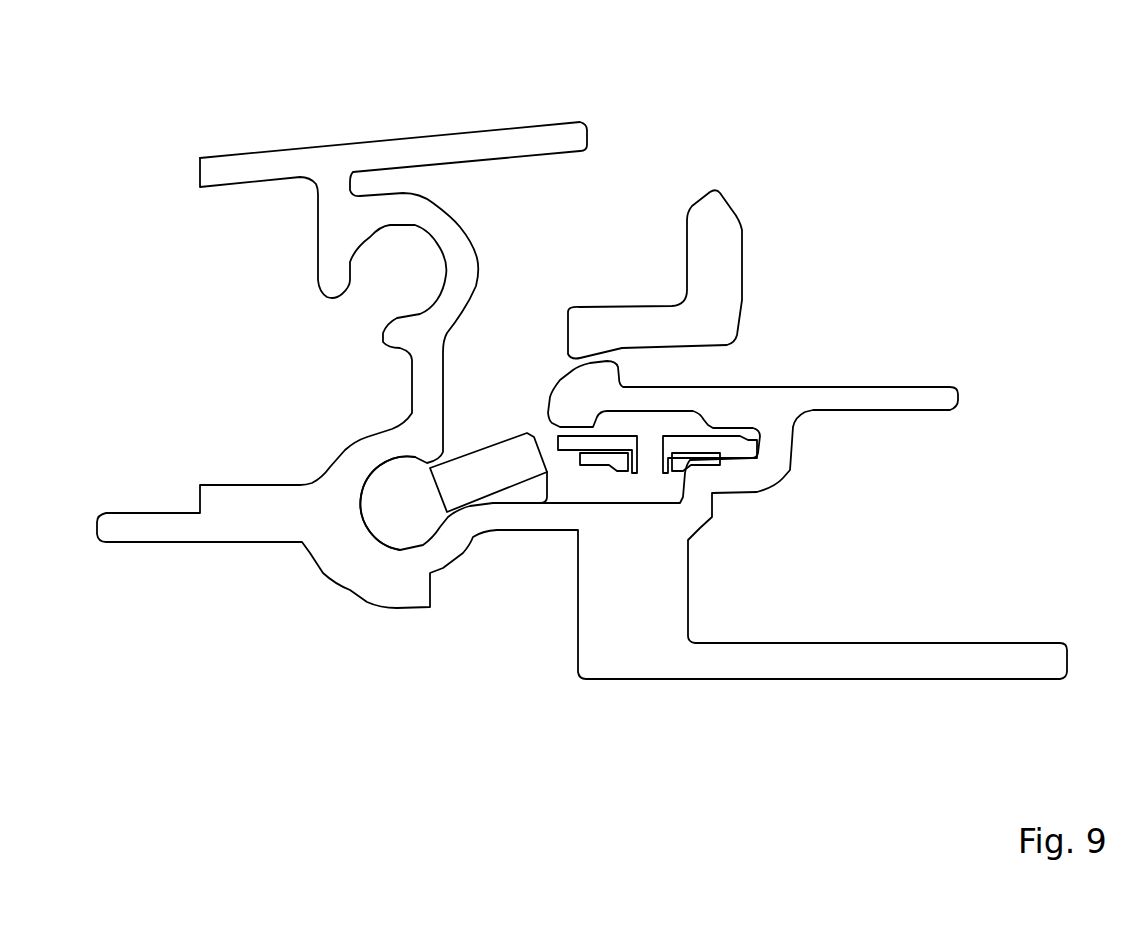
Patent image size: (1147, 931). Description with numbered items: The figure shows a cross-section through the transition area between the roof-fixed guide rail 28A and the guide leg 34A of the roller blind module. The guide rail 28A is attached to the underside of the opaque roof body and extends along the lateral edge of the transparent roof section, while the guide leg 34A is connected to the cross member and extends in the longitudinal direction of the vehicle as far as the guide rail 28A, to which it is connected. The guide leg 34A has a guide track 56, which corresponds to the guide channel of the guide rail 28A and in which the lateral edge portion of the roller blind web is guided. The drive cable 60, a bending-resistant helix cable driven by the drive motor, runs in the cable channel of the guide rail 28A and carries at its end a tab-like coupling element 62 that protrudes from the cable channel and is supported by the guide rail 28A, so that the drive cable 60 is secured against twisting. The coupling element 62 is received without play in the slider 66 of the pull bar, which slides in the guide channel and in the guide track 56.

The guide rail 28A is at (260, 163).
The guide leg 34A is at (623, 652).
The guide track 56 is at (648, 425).
The drive cable 60 is at (400, 515).
The coupling element 62 is at (488, 467).
The slider 66 is at (720, 440).